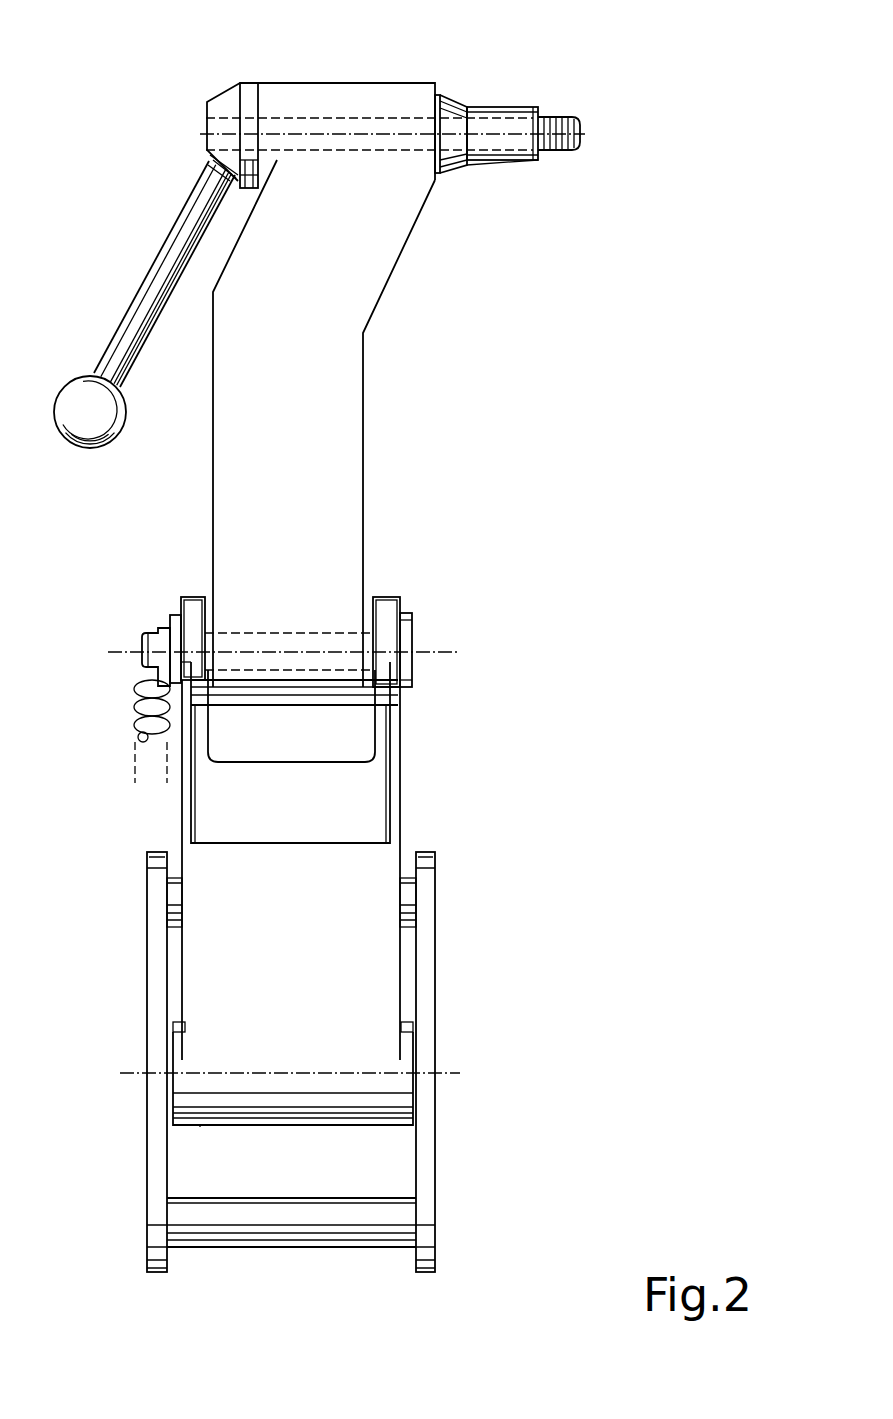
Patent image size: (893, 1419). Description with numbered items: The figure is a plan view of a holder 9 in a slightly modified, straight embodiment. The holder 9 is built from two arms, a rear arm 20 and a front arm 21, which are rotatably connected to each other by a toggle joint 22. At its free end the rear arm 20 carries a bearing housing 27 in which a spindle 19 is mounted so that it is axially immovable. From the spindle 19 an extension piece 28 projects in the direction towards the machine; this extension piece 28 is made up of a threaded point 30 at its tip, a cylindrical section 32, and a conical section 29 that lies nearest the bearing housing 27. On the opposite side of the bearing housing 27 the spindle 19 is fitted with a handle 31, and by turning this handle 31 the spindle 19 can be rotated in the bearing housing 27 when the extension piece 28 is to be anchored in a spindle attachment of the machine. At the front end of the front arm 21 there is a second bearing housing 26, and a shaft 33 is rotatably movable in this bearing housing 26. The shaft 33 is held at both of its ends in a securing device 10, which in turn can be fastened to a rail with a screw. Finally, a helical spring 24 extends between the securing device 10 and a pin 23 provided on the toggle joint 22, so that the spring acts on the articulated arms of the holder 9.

The holder 9 is at (138, 517).
The securing device 10 is at (435, 1163).
The spindle 19 is at (318, 118).
The rear arm 20 is at (365, 492).
The front arm 21 is at (400, 793).
The toggle joint 22 is at (337, 652).
The pin 23 is at (168, 628).
The helical spring 24 is at (138, 728).
The bearing housing 26 is at (200, 1127).
The bearing housing 27 is at (372, 95).
The extension piece 28 is at (496, 178).
The conical section 29 is at (453, 103).
The threaded point 30 is at (563, 117).
The handle 31 is at (168, 261).
The cylindrical section 32 is at (515, 107).
The shaft 33 is at (400, 1072).